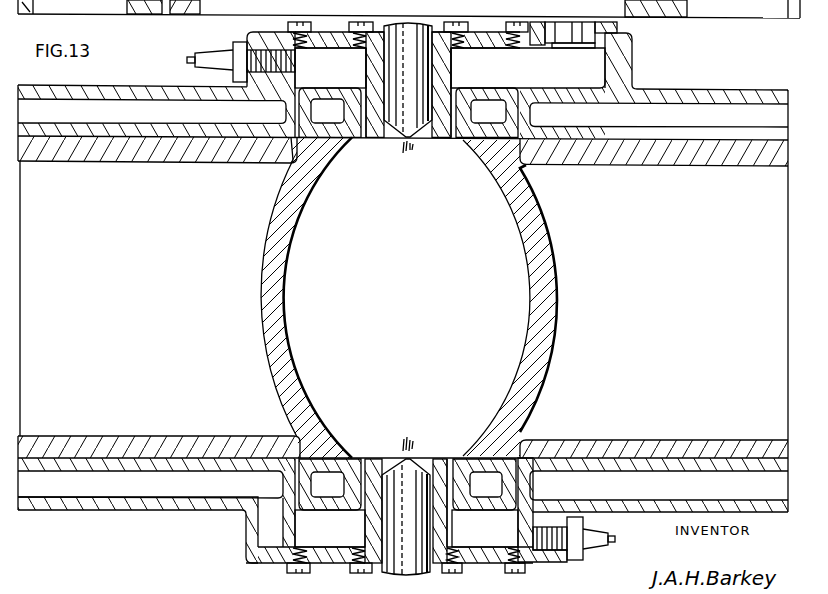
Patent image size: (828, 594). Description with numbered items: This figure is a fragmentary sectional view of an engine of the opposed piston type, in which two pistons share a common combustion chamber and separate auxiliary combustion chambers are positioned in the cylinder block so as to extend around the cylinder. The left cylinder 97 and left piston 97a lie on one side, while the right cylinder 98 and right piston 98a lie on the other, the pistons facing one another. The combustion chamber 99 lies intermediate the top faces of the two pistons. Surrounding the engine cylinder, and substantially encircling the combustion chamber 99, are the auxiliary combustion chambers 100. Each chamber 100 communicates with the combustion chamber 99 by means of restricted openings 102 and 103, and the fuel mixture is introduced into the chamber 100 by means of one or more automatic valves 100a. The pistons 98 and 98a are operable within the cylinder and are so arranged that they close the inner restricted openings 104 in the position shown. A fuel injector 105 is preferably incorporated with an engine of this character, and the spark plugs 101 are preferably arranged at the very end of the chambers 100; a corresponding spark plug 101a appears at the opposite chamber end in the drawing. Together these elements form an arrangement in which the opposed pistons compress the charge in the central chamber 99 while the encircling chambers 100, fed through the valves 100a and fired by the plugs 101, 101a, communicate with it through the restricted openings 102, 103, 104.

The left cylinder 97 is at (132, 84).
The left piston 97a is at (680, 87).
The right cylinder 98 is at (260, 239).
The right piston 98a is at (553, 229).
The combustion chamber 99 is at (407, 298).
The auxiliary combustion chambers 100 is at (450, 297).
The automatic valves 100a is at (585, 53).
The spark plugs 101 is at (214, 49).
The locking pin 101a is at (603, 523).
The restricted opening 102 is at (298, 164).
The restricted opening 103 is at (366, 147).
The inner restricted openings 104 is at (531, 165).
The fuel injector 105 is at (407, 299).